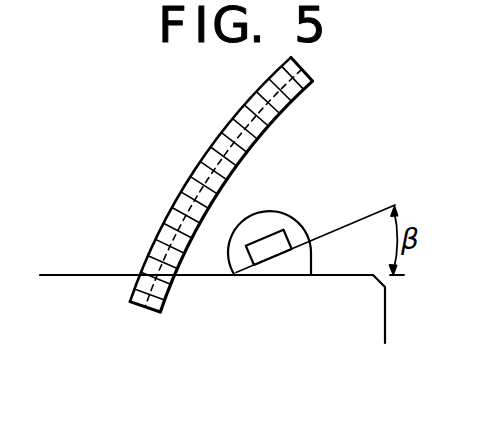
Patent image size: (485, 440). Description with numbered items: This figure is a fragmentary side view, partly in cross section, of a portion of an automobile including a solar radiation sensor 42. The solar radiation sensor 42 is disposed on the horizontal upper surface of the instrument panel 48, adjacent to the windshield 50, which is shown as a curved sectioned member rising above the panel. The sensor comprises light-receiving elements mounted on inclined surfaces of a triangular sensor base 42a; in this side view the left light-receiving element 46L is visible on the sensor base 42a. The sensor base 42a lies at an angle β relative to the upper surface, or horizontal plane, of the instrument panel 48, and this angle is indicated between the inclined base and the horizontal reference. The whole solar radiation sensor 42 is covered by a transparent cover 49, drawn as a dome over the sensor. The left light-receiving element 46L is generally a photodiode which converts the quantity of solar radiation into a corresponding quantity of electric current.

The solar radiation sensor 42 is at (281, 243).
The sensor base 42a is at (294, 268).
The left light-receiving element 46L is at (257, 249).
The instrument panel 48 is at (379, 323).
The transparent cover 49 is at (272, 211).
The windshield 50 is at (223, 134).